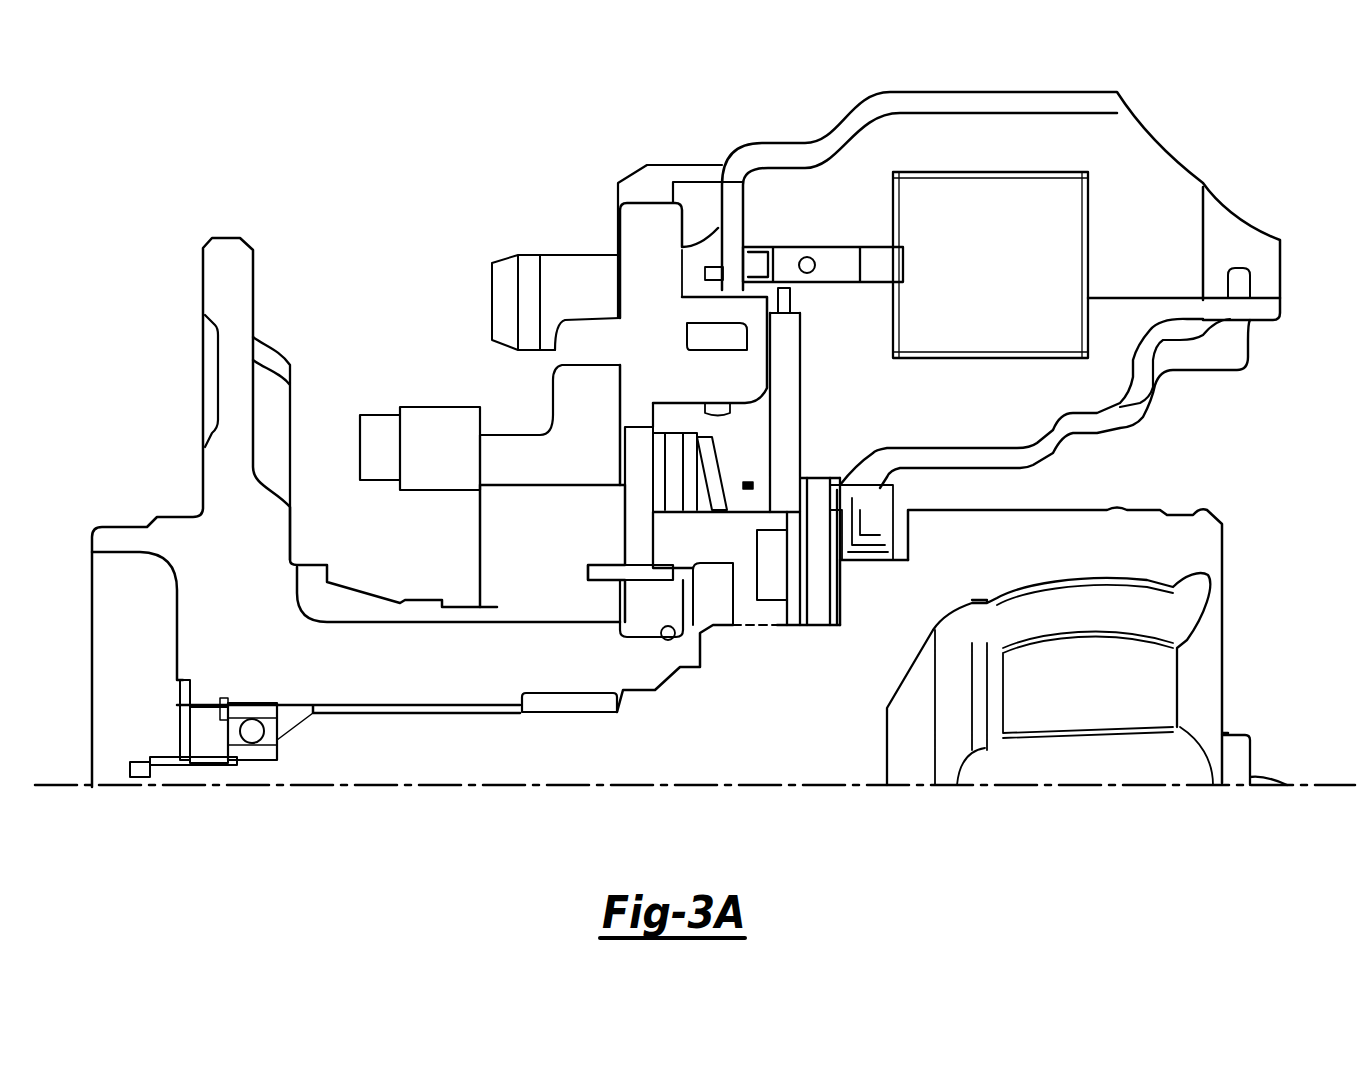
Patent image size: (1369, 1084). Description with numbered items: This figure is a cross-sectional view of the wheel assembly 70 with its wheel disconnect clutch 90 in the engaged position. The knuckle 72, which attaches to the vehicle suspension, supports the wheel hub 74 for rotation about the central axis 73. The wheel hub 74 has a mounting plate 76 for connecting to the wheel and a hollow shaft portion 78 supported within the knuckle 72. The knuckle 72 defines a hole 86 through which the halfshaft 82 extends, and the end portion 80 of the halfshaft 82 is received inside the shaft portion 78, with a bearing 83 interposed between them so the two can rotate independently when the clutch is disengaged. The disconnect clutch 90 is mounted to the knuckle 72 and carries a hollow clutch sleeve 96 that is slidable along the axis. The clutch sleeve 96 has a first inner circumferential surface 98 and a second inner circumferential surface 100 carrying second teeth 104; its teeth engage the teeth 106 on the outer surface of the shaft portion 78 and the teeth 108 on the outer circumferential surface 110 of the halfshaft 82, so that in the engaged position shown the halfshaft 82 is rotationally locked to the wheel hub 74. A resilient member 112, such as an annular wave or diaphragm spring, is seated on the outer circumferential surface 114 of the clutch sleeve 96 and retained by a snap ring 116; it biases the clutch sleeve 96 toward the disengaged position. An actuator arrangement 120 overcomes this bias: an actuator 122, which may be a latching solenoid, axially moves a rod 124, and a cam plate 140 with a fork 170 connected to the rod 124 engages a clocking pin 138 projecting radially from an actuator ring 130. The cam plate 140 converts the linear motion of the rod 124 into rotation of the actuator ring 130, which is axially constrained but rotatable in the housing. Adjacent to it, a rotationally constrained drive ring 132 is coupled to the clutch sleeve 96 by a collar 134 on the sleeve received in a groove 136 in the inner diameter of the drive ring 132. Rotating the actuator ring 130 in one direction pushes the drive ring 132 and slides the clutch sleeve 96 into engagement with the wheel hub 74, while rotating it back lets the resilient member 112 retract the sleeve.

The wheel assembly 70 is at (1228, 106).
The knuckle 72 is at (653, 203).
The central axis (centerline) 73 is at (1349, 820).
The wheel hub 74 is at (350, 665).
The mounting plate 76 is at (205, 290).
The shaft portion 78 is at (497, 688).
The end portion 80 is at (576, 760).
The halfshaft 82 is at (1083, 758).
The bearing 83 is at (560, 710).
The hole 86 is at (663, 443).
The wheel disconnect clutch 90 is at (790, 175).
The clutch sleeve 96 is at (662, 540).
The first inner circumferential surface 98 is at (680, 600).
The second inner circumferential surface 100 is at (803, 627).
The second teeth 104 is at (743, 625).
The teeth 106 is at (633, 600).
The teeth 108 is at (823, 635).
The outer circumferential surface 110 is at (763, 625).
The resilient member 112 is at (732, 462).
The outer circumferential surface 114 is at (668, 510).
The snap ring 116 is at (688, 440).
The actuator arrangement 120 is at (818, 225).
The actuator 122 is at (1033, 170).
The rod 124 is at (870, 252).
The actuator ring 130 is at (818, 480).
The drive ring 132 is at (737, 500).
The collar 134 is at (750, 495).
The groove 136 is at (755, 486).
The clocking pin 138 is at (790, 388).
The cam plate 140 is at (828, 290).
The fork 170 is at (872, 250).